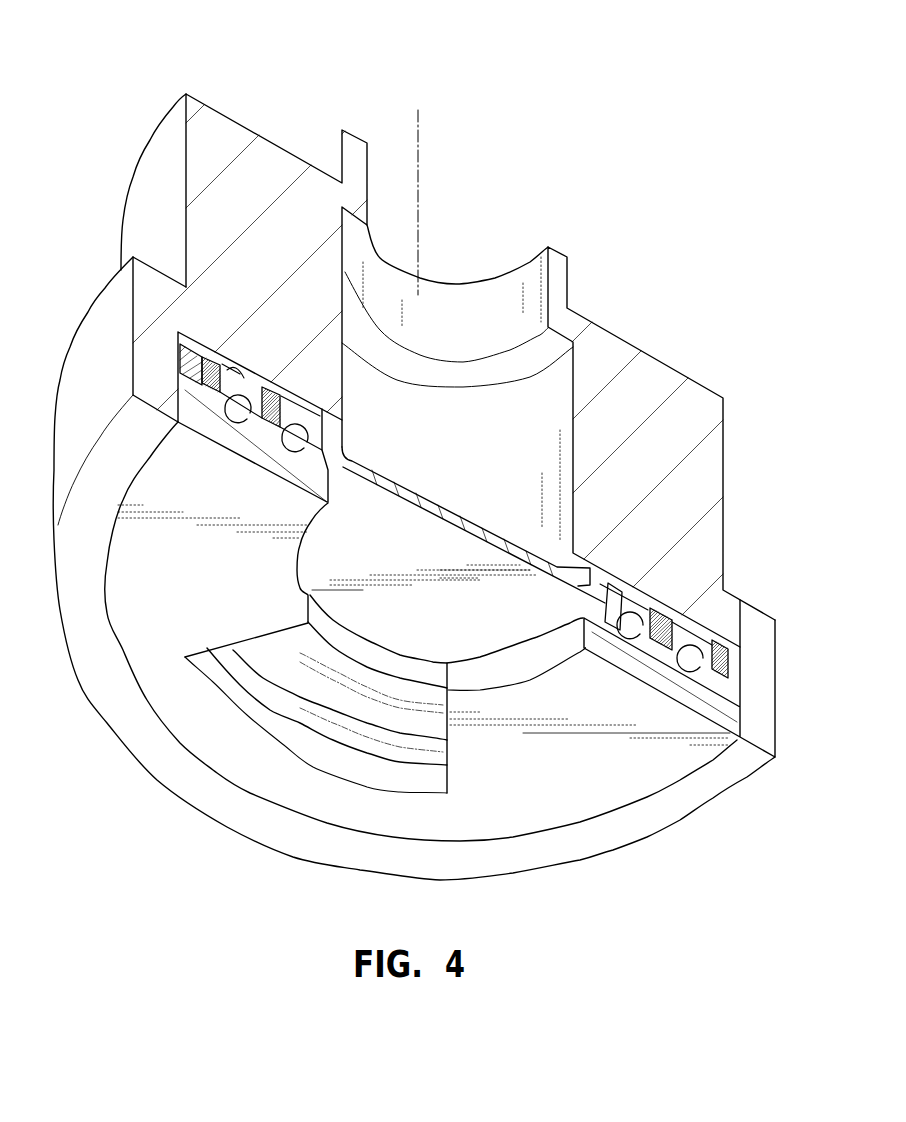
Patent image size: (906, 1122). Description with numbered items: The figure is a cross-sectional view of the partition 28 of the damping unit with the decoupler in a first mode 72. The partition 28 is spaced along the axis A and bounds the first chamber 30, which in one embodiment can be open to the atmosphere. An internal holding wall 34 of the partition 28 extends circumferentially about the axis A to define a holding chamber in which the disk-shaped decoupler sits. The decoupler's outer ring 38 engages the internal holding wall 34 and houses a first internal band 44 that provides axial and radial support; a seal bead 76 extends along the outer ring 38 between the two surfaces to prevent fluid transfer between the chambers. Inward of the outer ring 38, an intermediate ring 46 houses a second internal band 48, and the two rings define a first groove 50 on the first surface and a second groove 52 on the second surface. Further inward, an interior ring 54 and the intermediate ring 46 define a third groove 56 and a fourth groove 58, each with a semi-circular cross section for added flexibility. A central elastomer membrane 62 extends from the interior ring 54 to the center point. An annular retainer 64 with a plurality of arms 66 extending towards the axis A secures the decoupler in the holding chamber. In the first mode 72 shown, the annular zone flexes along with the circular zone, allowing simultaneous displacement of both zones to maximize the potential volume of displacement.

The partition 28 is at (672, 430).
The first chamber 30 is at (403, 455).
The internal holding wall 34 is at (742, 690).
The outer ring 38 is at (680, 628).
The first internal band 44 is at (710, 665).
The intermediate ring 46 is at (270, 386).
The second internal band 48 is at (720, 638).
The first groove 50 is at (247, 359).
The second groove 52 is at (237, 410).
The interior ring 54 is at (633, 582).
The third groove 56 is at (300, 417).
The fourth groove 58 is at (297, 437).
The central elastomer membrane 62 is at (492, 640).
The retainer 64 is at (163, 682).
The arms 66 is at (238, 610).
The first mode 72 is at (112, 98).
The seal bead 76 is at (176, 346).
The axis A is at (418, 143).